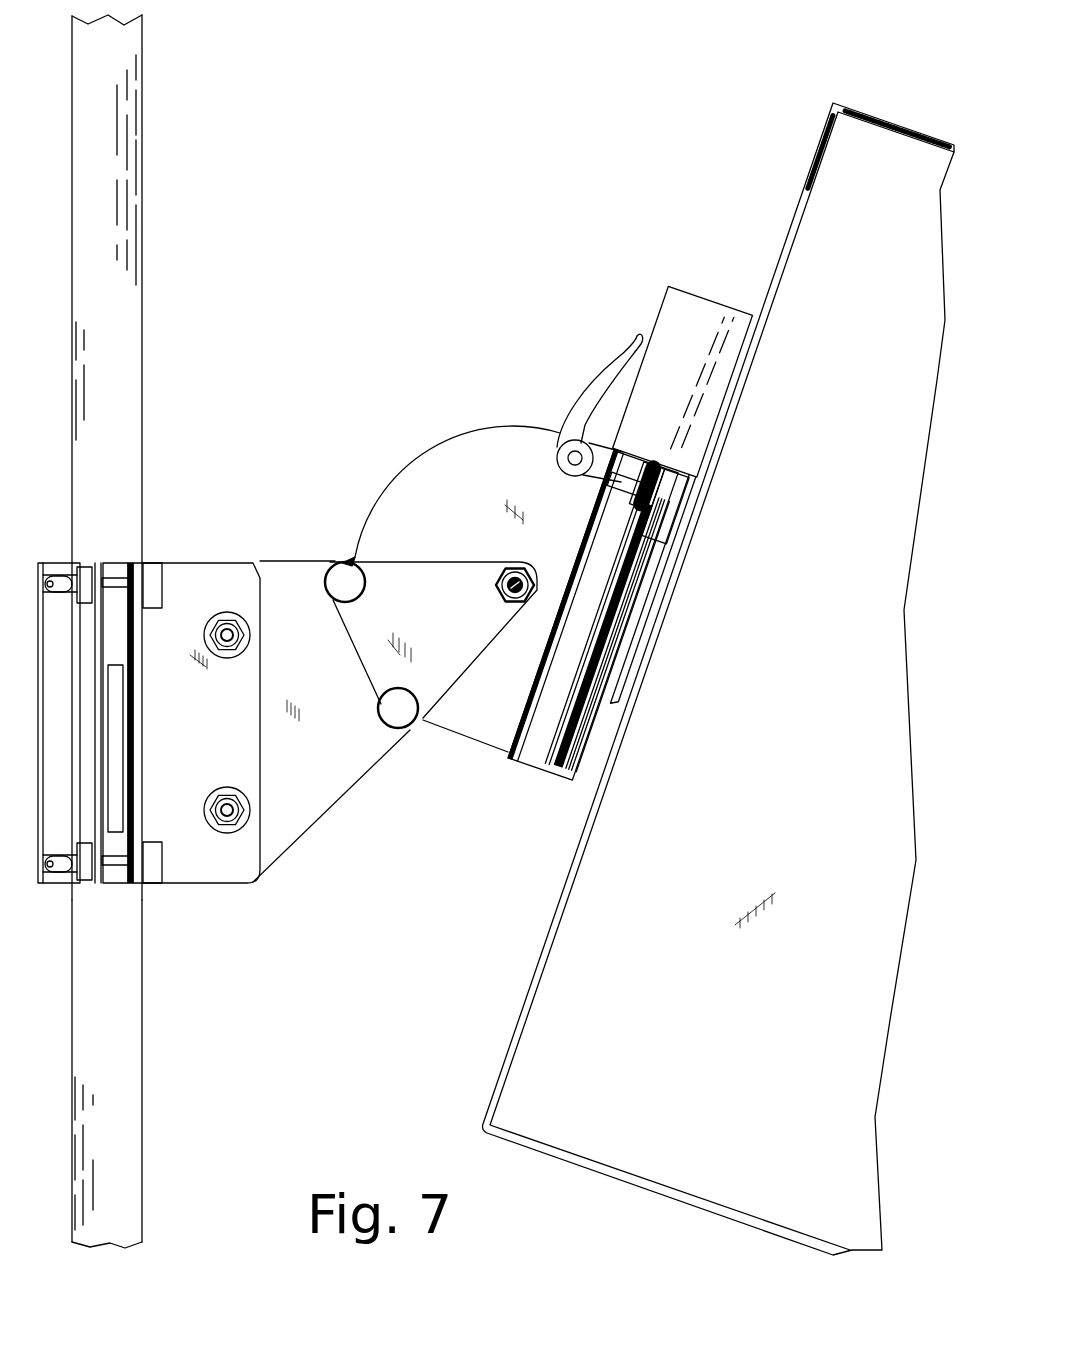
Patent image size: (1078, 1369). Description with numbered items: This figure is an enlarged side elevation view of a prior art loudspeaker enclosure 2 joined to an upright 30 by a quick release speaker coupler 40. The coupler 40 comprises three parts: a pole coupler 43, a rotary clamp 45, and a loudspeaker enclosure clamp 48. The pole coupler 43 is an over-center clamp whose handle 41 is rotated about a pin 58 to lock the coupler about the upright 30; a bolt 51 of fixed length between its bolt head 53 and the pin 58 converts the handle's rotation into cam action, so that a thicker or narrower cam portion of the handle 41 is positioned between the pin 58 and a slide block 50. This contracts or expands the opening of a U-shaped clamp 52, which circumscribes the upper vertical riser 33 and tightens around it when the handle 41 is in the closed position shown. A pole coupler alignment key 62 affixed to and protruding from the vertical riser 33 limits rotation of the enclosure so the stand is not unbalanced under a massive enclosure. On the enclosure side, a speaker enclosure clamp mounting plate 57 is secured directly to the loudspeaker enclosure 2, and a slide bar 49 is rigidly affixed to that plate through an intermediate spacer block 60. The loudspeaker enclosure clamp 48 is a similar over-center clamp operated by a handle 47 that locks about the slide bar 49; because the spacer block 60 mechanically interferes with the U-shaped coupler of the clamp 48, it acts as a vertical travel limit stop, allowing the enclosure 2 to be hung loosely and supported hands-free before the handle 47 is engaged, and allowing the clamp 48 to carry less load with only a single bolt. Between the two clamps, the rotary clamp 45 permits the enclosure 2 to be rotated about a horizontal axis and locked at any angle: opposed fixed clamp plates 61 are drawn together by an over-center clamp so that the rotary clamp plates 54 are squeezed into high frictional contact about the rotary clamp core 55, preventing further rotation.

The loudspeaker enclosure 2 is at (815, 208).
The upright 30 is at (152, 305).
The upper vertical riser 33 is at (137, 1122).
The quick release speaker coupler 40 is at (200, 727).
The handle 41 is at (78, 769).
The pole coupler 43 is at (207, 509).
The rotary clamp 45 is at (351, 665).
The handle 47 is at (586, 394).
The loudspeaker enclosure clamp 48 is at (564, 375).
The slide bar 49 is at (670, 308).
The slide block 50 is at (85, 570).
The bolt 51 is at (232, 722).
The U-shaped clamp 52 is at (98, 565).
The bolt head 53 is at (152, 583).
The rotary clamp plates 54 is at (464, 466).
The rotary clamp core 55 is at (302, 580).
The speaker enclosure clamp mounting plate 57 is at (640, 660).
The pin 58 is at (62, 578).
The spacer block 60 is at (745, 300).
The fixed clamp plates 61 is at (432, 630).
The pole coupler alignment key 62 is at (118, 715).